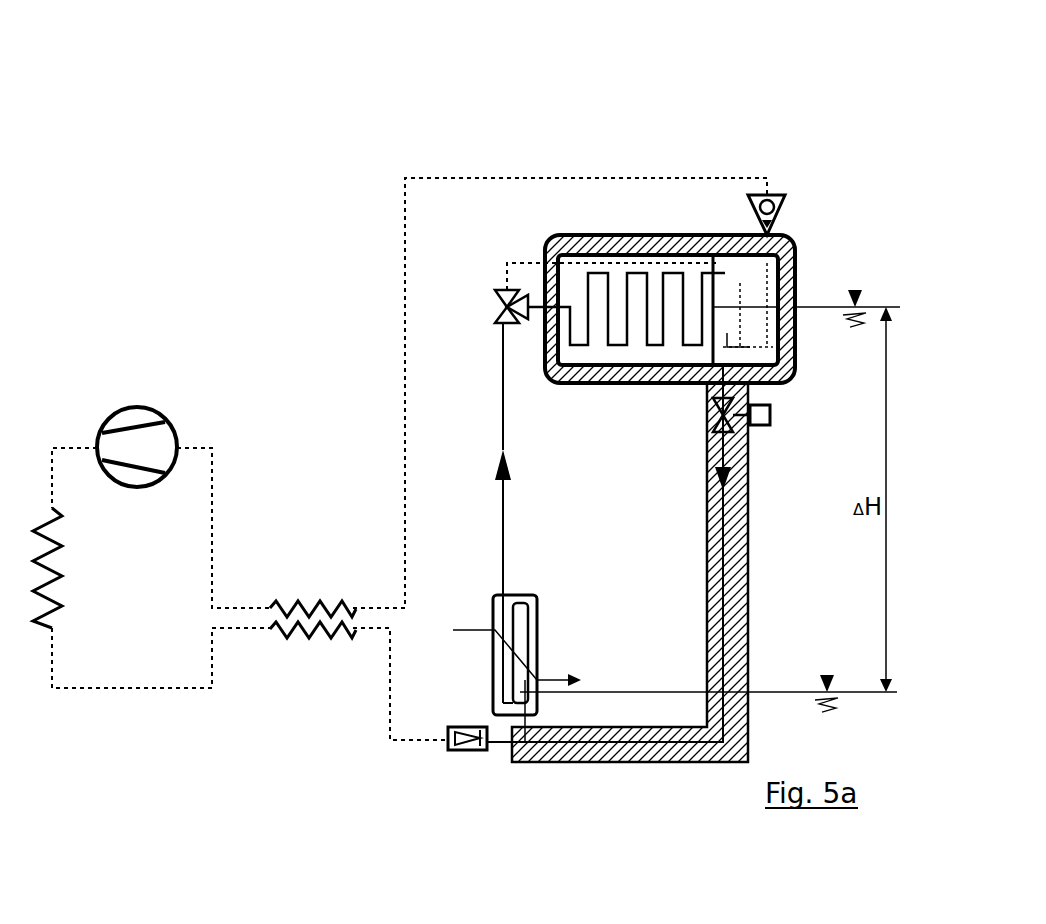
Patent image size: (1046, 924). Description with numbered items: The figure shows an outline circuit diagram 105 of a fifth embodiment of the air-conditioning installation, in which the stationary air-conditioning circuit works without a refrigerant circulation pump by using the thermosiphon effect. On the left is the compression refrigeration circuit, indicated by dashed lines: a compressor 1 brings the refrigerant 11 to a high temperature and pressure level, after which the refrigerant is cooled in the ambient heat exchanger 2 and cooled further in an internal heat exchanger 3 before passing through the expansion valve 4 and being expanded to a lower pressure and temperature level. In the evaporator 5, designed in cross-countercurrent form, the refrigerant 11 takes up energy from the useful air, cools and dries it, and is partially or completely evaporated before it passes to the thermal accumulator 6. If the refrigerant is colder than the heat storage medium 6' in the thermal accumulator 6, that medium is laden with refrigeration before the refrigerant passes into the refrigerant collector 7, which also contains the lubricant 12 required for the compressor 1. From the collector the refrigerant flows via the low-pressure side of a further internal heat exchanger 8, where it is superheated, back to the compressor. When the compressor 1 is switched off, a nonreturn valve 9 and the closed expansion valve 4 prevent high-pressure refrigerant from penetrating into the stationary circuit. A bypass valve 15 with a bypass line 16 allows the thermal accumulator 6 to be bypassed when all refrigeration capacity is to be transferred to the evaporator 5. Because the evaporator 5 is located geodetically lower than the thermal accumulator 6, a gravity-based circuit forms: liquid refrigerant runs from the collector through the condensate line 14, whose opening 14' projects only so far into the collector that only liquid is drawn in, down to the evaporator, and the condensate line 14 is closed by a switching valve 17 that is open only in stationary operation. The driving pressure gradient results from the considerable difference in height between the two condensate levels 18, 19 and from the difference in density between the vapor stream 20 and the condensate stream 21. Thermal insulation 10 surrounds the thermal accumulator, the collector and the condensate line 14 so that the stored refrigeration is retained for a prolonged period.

The compressor 1 is at (143, 402).
The ambient heat exchanger 2 is at (47, 552).
The internal heat exchanger 3 is at (283, 640).
The expansion valve 4 is at (458, 752).
The evaporator 5 is at (493, 652).
The thermal accumulator 6 is at (670, 407).
The heat storage medium 6' is at (626, 390).
The refrigerant collector 7 is at (795, 257).
The further internal heat exchanger 8 is at (294, 600).
The nonreturn valve 9 is at (782, 193).
The thermal insulation 10 is at (537, 763).
The refrigerant 11 is at (753, 327).
The lubricant 12 is at (770, 425).
The condensate line 14 is at (630, 625).
The opening of the condensate line 14' is at (670, 262).
The bypass valve 15 is at (498, 317).
The bypass line 16 is at (535, 312).
The switching valve 17 is at (748, 455).
The condensate level 18 is at (847, 290).
The condensate level 19 is at (708, 672).
The vapor stream 20 is at (497, 477).
The condensate stream 21 is at (747, 543).
The circuit diagram 105 is at (771, 71).